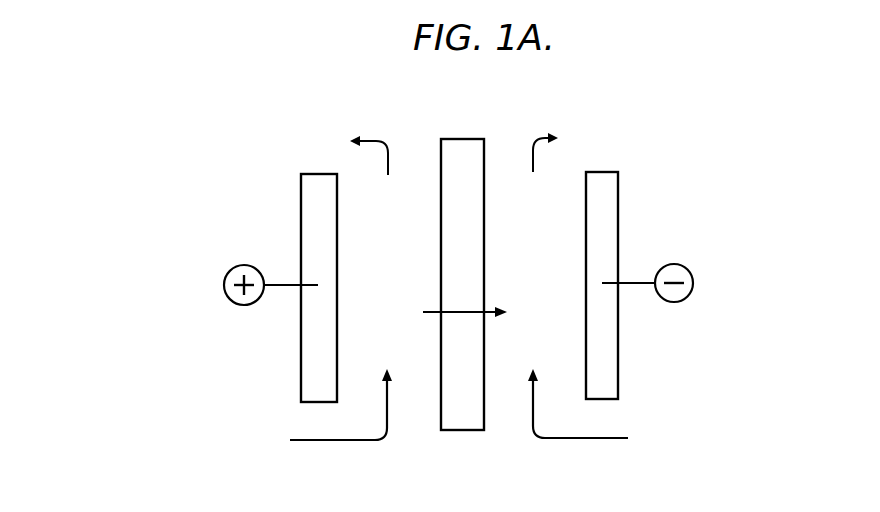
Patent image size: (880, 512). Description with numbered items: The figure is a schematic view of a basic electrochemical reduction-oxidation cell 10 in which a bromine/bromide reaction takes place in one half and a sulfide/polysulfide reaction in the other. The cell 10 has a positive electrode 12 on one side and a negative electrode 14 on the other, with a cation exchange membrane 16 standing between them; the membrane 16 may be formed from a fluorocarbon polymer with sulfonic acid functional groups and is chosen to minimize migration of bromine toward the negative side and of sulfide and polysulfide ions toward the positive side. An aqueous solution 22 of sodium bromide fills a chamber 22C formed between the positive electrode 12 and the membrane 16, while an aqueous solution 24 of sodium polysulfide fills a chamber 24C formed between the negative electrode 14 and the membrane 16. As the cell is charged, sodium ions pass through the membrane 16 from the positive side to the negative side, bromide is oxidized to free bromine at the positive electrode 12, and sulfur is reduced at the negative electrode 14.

The cell 10 is at (381, 101).
The positive electrode 12 is at (308, 191).
The negative electrode 14 is at (605, 183).
The cation exchange membrane 16 is at (462, 147).
The aqueous solution of NaBr 22 is at (225, 427).
The chamber 22C is at (389, 260).
The aqueous solution of Na2Sx 24 is at (680, 412).
The chamber 24C is at (534, 254).